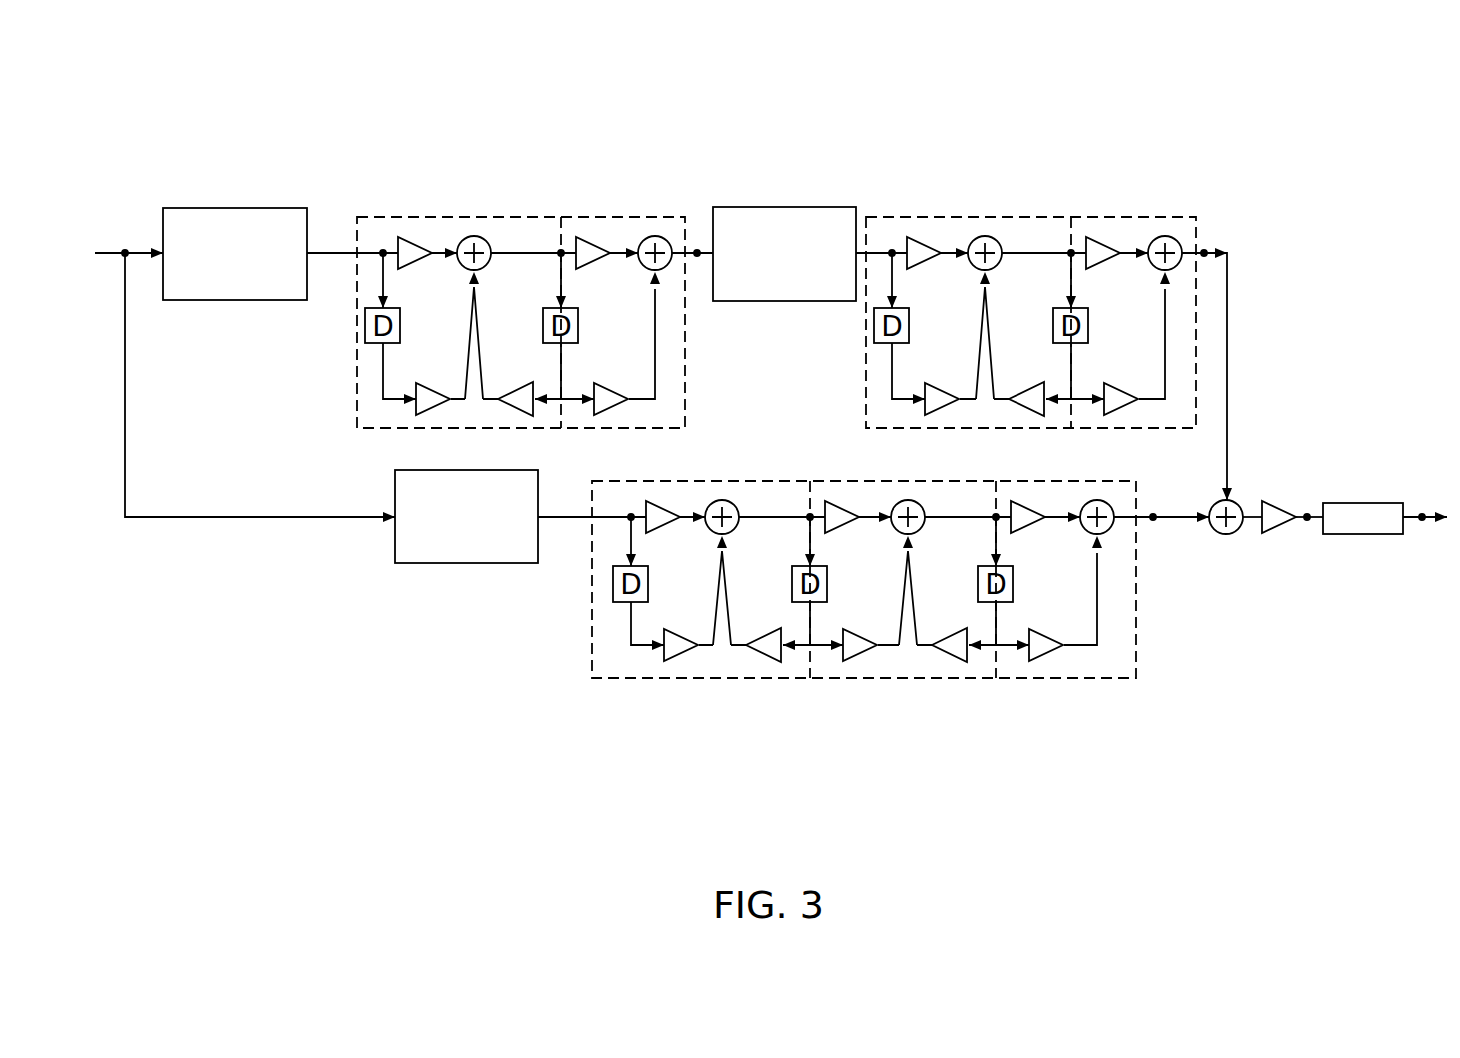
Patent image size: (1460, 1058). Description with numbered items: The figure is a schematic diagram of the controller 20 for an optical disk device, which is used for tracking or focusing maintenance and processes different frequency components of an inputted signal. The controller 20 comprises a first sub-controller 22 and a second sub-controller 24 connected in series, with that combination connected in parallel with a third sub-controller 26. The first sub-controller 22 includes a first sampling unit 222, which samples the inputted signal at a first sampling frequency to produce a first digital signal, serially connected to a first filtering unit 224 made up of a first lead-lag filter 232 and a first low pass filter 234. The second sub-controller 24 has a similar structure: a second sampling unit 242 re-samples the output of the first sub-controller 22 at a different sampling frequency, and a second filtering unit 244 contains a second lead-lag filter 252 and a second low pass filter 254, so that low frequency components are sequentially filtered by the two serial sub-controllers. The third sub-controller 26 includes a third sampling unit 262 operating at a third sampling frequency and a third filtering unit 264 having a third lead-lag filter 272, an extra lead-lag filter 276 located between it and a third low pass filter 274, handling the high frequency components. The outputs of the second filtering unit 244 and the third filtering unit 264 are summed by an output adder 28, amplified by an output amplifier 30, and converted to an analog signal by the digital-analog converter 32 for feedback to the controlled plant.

The controller 20 is at (771, 434).
The first sub-controller 22 is at (439, 247).
The first sampling unit 222 is at (292, 215).
The first filtering unit 224 is at (536, 272).
The first lead-lag filter 232 is at (423, 228).
The first low pass filter 234 is at (625, 286).
The second sub-controller 24 is at (990, 247).
The second sampling unit 242 is at (843, 213).
The second filtering unit 244 is at (1067, 272).
The second lead-lag filter 252 is at (975, 228).
The second low pass filter 254 is at (1042, 157).
The third sub-controller 26 is at (771, 650).
The third sampling unit 262 is at (420, 553).
The third filtering unit 264 is at (870, 631).
The third lead-lag filter 272 is at (640, 662).
The extra lead-lag filter 276 is at (872, 660).
The third low pass filter 274 is at (1058, 611).
The output adder 28 is at (1218, 527).
The output amplifier 30 is at (1273, 525).
The digital-analog converter 32 is at (1387, 532).